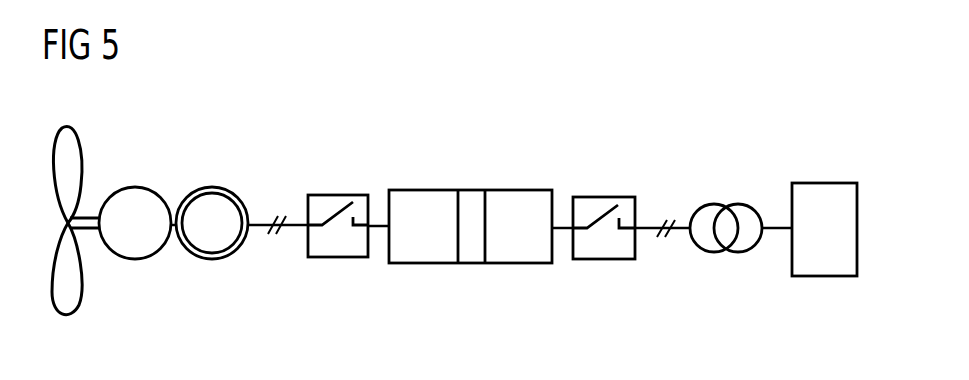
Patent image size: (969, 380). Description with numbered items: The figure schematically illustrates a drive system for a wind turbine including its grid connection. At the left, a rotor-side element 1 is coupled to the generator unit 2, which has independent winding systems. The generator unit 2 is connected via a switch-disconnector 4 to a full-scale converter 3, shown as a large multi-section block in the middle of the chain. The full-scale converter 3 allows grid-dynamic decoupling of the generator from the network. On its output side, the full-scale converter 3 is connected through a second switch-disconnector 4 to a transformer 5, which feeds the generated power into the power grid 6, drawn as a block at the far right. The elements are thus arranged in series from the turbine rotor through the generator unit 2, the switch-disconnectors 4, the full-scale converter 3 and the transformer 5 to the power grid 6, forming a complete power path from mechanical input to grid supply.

The generator 1 is at (135, 187).
The generator unit 2 is at (212, 187).
The full-scale converter 3 is at (472, 190).
The switch-disconnector 4 is at (339, 195).
The transformer 5 is at (713, 205).
The power grid 6 is at (825, 183).